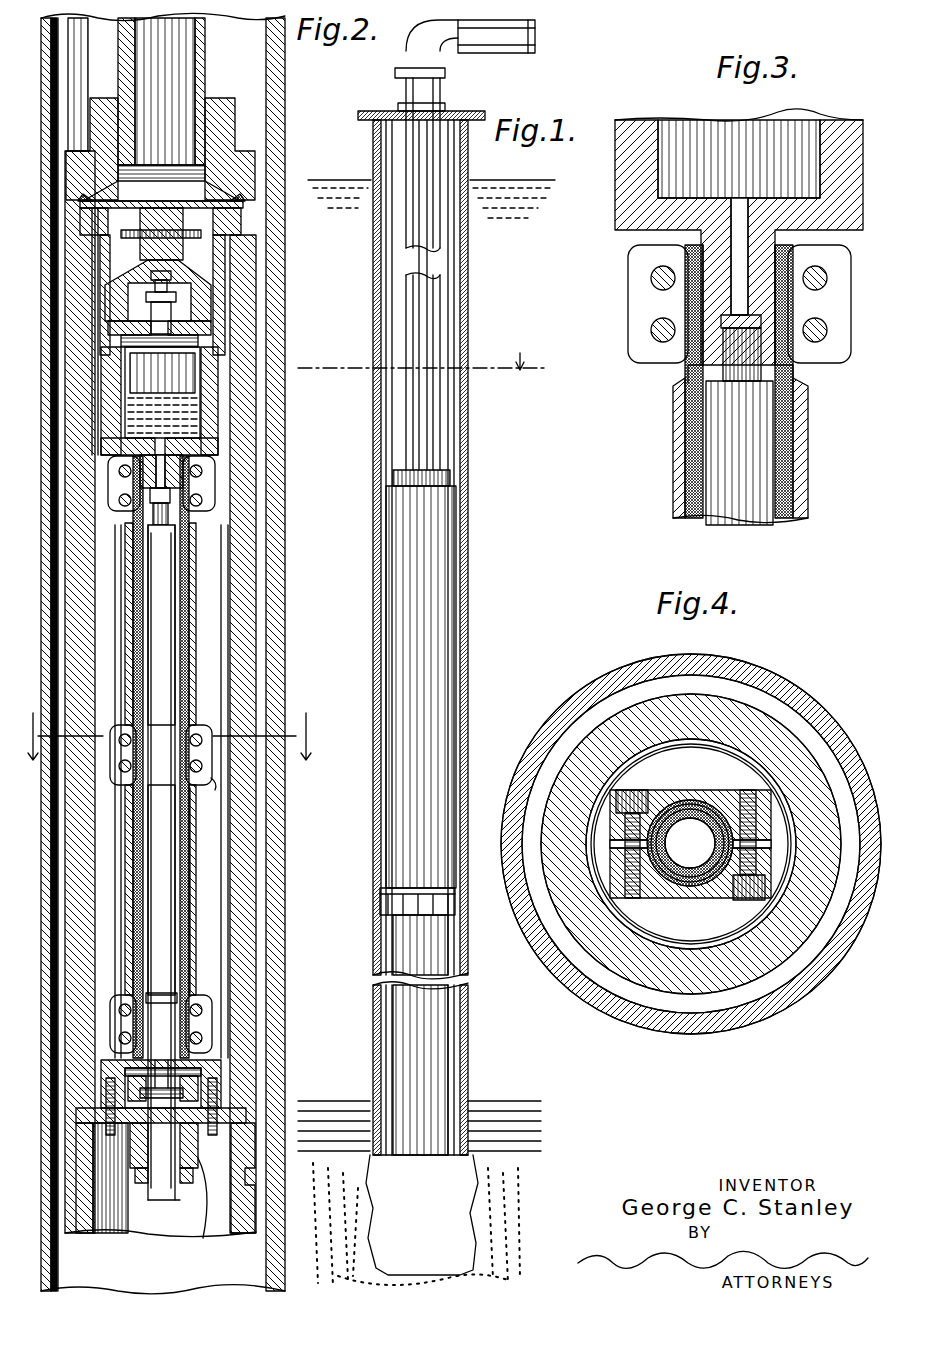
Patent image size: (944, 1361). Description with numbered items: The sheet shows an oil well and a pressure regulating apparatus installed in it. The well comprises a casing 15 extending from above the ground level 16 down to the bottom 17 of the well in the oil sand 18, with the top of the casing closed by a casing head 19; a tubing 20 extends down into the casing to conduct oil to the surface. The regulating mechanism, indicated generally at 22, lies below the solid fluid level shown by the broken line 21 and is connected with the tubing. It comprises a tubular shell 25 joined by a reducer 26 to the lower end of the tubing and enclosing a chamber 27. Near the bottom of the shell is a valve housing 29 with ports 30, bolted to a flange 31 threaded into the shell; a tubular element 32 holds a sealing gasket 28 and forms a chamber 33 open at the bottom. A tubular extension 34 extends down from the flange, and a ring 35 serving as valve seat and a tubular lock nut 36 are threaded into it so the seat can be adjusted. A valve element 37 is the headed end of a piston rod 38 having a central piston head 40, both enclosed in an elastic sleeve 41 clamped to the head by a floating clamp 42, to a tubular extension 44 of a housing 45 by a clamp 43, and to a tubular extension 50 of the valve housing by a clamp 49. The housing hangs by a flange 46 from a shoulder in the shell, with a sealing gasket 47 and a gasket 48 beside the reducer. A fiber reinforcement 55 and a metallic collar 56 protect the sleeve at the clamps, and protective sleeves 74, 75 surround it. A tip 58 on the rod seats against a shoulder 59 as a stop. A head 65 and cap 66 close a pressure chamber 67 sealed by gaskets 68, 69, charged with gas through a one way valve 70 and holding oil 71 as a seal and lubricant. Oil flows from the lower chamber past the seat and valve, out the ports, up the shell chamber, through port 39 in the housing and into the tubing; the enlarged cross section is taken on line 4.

In FIG. 2, the casing 15 is at (277, 595).
In FIG. 1, the casing 15 is at (460, 440).
In FIG. 4, the casing 15 is at (762, 676).
In FIG. 1, the ground level 16 is at (333, 172).
In FIG. 1, the bottom of the well 17 is at (452, 1190).
In FIG. 1, the oil sand 18 is at (502, 1166).
In FIG. 1, the casing head 19 is at (455, 105).
In FIG. 2, the tubing 20 is at (172, 38).
In FIG. 1, the tubing 20 is at (425, 225).
In FIG. 1, the solid fluid level 21 is at (423, 348).
In FIG. 1, the pressure regulating apparatus 22 is at (422, 566).
In FIG. 2, the tubular shell 25 is at (232, 500).
In FIG. 4, the tubular shell 25 is at (782, 722).
In FIG. 2, the reducer 26 is at (228, 95).
In FIG. 2, the chamber 27 is at (203, 548).
In FIG. 4, the chamber 27 is at (607, 755).
In FIG. 2, the sealing gasket 28 is at (210, 1088).
In FIG. 2, the valve housing 29 is at (213, 1060).
In FIG. 2, the ports 30 is at (127, 1080).
In FIG. 2, the flange 31 is at (240, 1105).
In FIG. 2, the tubular element 32 is at (246, 1200).
In FIG. 1, the tubular element 32 is at (390, 897).
In FIG. 2, the chamber 33 is at (207, 1200).
In FIG. 2, the tubular extension 34 is at (168, 1193).
In FIG. 2, the ring 35 is at (70, 1107).
In FIG. 2, the tubular lock nut 36 is at (145, 1190).
In FIG. 2, the valve element 37 is at (176, 1084).
In FIG. 2, the piston rod 38 is at (158, 910).
In FIG. 3, the piston rod 38 is at (725, 408).
In FIG. 2, the port 39 is at (97, 245).
In FIG. 2, the piston head 40 is at (150, 740).
In FIG. 4, the piston head 40 is at (695, 800).
In FIG. 2, the elastic sleeve 41 is at (188, 660).
In FIG. 3, the elastic sleeve 41 is at (785, 475).
In FIG. 4, the elastic sleeve 41 is at (698, 862).
In FIG. 2, the clamp 42 is at (215, 785).
In FIG. 4, the clamp 42 is at (648, 782).
In FIG. 2, the clamp 43 is at (190, 500).
In FIG. 3, the clamp 43 is at (632, 309).
In FIG. 2, the tubular extension 44 is at (205, 452).
In FIG. 3, the tubular extension 44 is at (707, 247).
In FIG. 2, the housing 45 is at (212, 418).
In FIG. 3, the housing 45 is at (618, 205).
In FIG. 2, the flange 46 is at (222, 208).
In FIG. 2, the sealing gasket 47 is at (232, 218).
In FIG. 2, the gasket 48 is at (230, 190).
In FIG. 2, the clamp 49 is at (210, 1020).
In FIG. 2, the tubular extension 50 is at (160, 998).
In FIG. 2, the fiber reinforcement 55 is at (125, 500).
In FIG. 3, the fiber reinforcement 55 is at (680, 362).
In FIG. 4, the fiber reinforcement 55 is at (676, 880).
In FIG. 2, the metallic collar 56 is at (105, 470).
In FIG. 3, the metallic collar 56 is at (677, 338).
In FIG. 4, the metallic collar 56 is at (662, 876).
In FIG. 2, the tip 58 is at (200, 490).
In FIG. 3, the tip 58 is at (732, 354).
In FIG. 2, the shoulder 59 is at (215, 462).
In FIG. 3, the shoulder 59 is at (753, 312).
In FIG. 2, the head 65 is at (195, 258).
In FIG. 2, the cap 66 is at (205, 322).
In FIG. 2, the pressure chamber 67 is at (178, 372).
In FIG. 2, the gasket 68 is at (195, 338).
In FIG. 2, the gasket 69 is at (165, 288).
In FIG. 2, the one way valve 70 is at (150, 395).
In FIG. 2, the oil 71 is at (160, 405).
In FIG. 2, the protective sleeve 74 is at (186, 605).
In FIG. 3, the protective sleeve 74 is at (668, 460).
In FIG. 2, the protective sleeve 75 is at (188, 862).
In FIG. 2, the section line 4- 4 is at (169, 736).